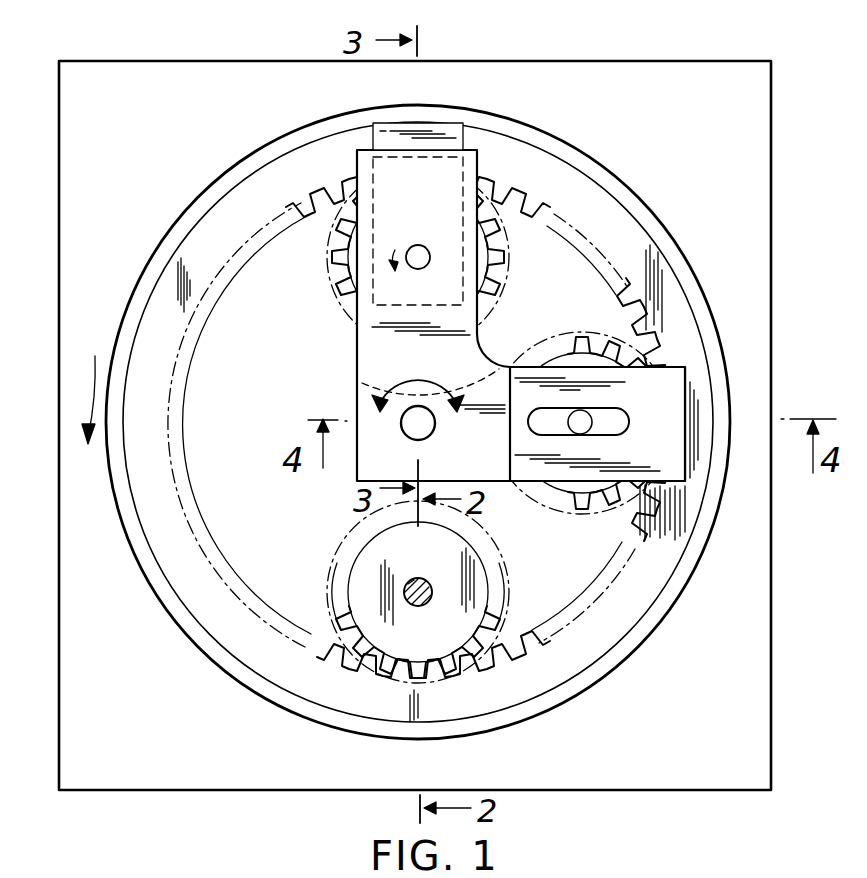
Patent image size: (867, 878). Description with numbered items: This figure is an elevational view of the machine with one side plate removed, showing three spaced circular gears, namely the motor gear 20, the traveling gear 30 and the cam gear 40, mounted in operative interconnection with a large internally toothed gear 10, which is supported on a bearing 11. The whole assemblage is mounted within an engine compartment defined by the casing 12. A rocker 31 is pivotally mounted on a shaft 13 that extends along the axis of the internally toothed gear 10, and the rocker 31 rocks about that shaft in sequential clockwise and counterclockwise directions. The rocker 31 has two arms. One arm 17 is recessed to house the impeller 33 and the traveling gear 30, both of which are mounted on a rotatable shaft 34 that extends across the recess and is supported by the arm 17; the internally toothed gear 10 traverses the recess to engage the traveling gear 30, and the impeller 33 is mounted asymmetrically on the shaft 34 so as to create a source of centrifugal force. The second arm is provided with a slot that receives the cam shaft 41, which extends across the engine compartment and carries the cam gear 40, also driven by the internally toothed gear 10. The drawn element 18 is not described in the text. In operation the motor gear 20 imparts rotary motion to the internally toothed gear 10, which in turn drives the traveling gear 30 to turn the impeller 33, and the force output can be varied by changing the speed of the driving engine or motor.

The internally toothed gear 10 is at (507, 185).
The bearing 11 is at (556, 150).
The casing 12 is at (690, 60).
The shaft 13 is at (402, 418).
The arm 17 is at (357, 333).
The slotted plate 18 is at (539, 483).
The motor gear 20 is at (362, 592).
The traveling gear 30 is at (343, 232).
The rocker 31 is at (392, 232).
The impeller 33 is at (428, 133).
The shaft 34 is at (421, 251).
The cam gear 40 is at (578, 362).
The cam shaft 41 is at (580, 426).